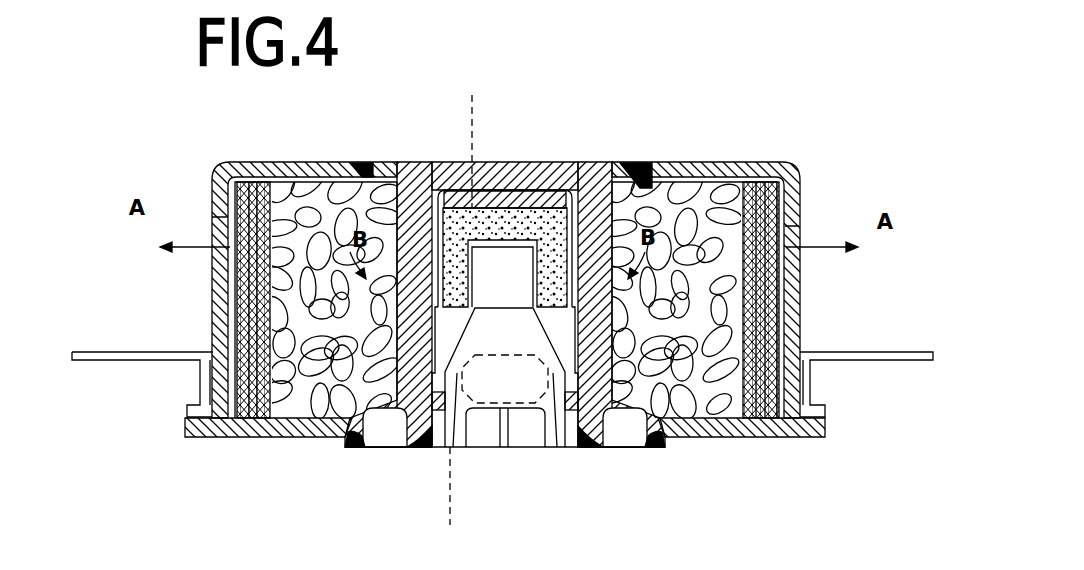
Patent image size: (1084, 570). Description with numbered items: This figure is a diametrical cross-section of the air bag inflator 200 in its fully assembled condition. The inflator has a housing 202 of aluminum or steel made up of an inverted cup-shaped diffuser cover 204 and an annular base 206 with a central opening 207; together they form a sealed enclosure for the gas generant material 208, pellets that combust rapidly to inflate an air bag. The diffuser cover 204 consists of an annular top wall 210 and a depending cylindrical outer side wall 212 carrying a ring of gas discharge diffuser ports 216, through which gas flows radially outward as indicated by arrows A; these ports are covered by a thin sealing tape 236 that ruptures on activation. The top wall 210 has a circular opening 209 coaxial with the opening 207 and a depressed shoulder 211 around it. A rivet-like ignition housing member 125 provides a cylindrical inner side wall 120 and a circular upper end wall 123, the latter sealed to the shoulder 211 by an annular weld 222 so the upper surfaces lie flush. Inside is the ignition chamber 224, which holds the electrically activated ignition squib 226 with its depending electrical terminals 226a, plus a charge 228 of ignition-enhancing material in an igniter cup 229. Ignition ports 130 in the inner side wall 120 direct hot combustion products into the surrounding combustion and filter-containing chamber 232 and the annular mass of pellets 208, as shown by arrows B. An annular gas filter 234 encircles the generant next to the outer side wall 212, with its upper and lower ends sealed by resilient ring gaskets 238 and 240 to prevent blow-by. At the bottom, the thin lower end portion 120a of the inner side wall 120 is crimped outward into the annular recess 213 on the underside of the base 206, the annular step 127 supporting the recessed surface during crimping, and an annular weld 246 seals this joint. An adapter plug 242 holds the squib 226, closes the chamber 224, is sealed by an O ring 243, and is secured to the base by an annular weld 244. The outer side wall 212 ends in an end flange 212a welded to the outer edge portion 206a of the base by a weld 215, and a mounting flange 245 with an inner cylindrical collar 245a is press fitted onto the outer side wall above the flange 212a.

The cylindrical inner side wall 120 is at (490, 225).
The lower end portion of the inner side wall 120a is at (385, 445).
The circular upper end wall 123 is at (530, 185).
The rivet-like ignition housing member 125 is at (508, 165).
The annular step 127 is at (612, 447).
The ignition ports 130 is at (468, 218).
The air bag inflator 200 is at (496, 521).
The housing 202 is at (182, 299).
The diffuser cover 204 is at (796, 164).
The base 206 is at (205, 442).
The outer edge portion of the base 206a is at (200, 434).
The central opening 207 is at (410, 447).
The gas generant material 208 is at (350, 290).
The circular opening 209 is at (650, 170).
The annular top wall 210 is at (268, 170).
The shoulder 211 is at (393, 190).
The cylindrical outer side wall 212 is at (212, 331).
The end flange 212a is at (195, 400).
The annular recess 213 is at (655, 430).
The weld 215 is at (192, 420).
The gas discharge diffuser ports 216 is at (216, 217).
The annular weld 222 is at (358, 166).
The ignition chamber 224 is at (548, 192).
The ignition squib 226 is at (493, 453).
The electrical terminals 226a is at (535, 449).
The charge of ignition-enhancing material 228 is at (517, 258).
The igniter cup 229 is at (470, 140).
The combustion and filter-containing chamber 232 is at (700, 170).
The annular gas filter 234 is at (262, 418).
The sealing tape 236 is at (232, 262).
The sealing ring gasket 238 is at (232, 163).
The sealing ring gasket 240 is at (248, 418).
The adapter plug 242 is at (445, 447).
The O ring 243 is at (572, 447).
The annular weld 244 is at (330, 442).
The mounting flange 245 is at (72, 352).
The inner cylindrical collar 245a is at (200, 380).
The annular weld 246 is at (435, 447).